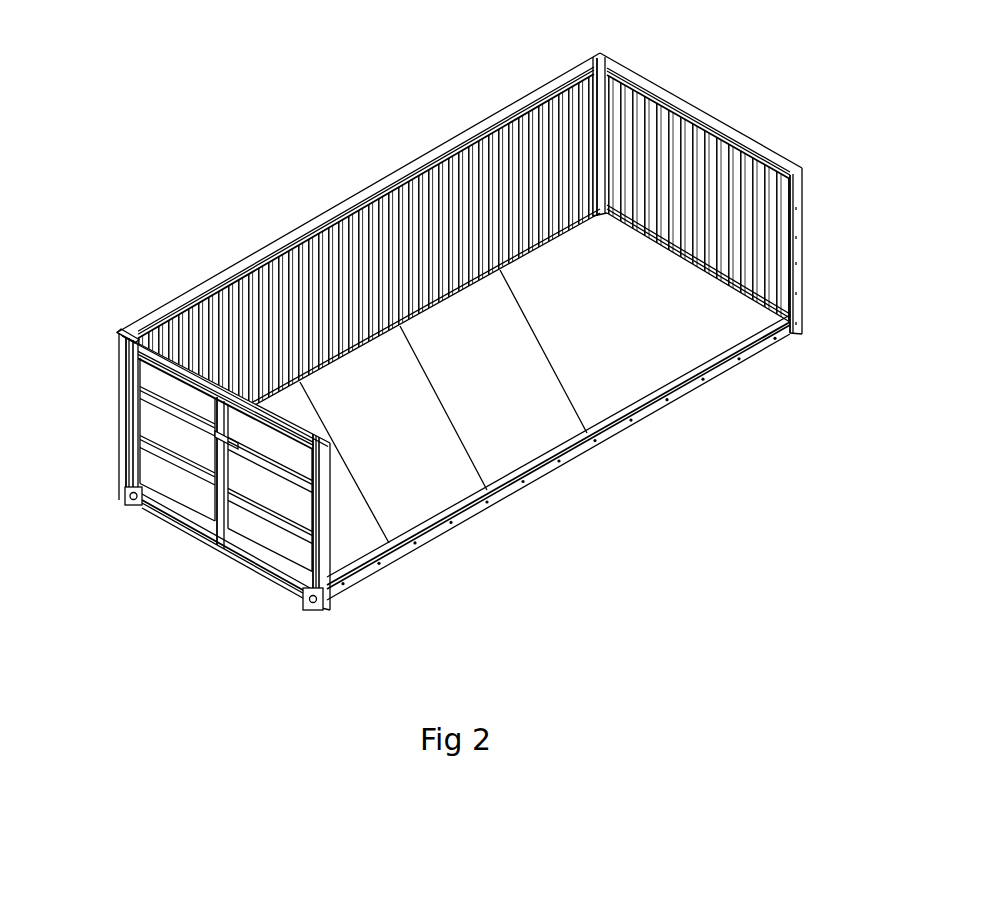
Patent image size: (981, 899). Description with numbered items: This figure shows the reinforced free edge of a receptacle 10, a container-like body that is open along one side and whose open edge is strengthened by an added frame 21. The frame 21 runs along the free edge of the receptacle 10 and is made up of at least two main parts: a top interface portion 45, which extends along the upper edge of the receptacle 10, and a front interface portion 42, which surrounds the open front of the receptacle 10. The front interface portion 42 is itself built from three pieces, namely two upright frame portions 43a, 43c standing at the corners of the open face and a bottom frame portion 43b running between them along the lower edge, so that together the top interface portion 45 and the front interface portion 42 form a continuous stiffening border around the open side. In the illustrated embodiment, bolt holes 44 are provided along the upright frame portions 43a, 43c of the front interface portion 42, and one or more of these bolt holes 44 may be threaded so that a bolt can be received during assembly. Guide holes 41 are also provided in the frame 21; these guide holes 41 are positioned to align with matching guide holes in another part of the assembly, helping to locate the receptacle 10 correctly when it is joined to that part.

The receptacle 10 is at (476, 348).
The frame 21 is at (655, 90).
The guide holes 41 is at (783, 342).
The front interface portion 42 is at (802, 205).
The upright frame portion 43a is at (320, 520).
The bottom frame portion 43b is at (560, 460).
The upright frame portion 43c is at (795, 252).
The bolt holes 44 is at (310, 605).
The top interface portion 45 is at (283, 245).